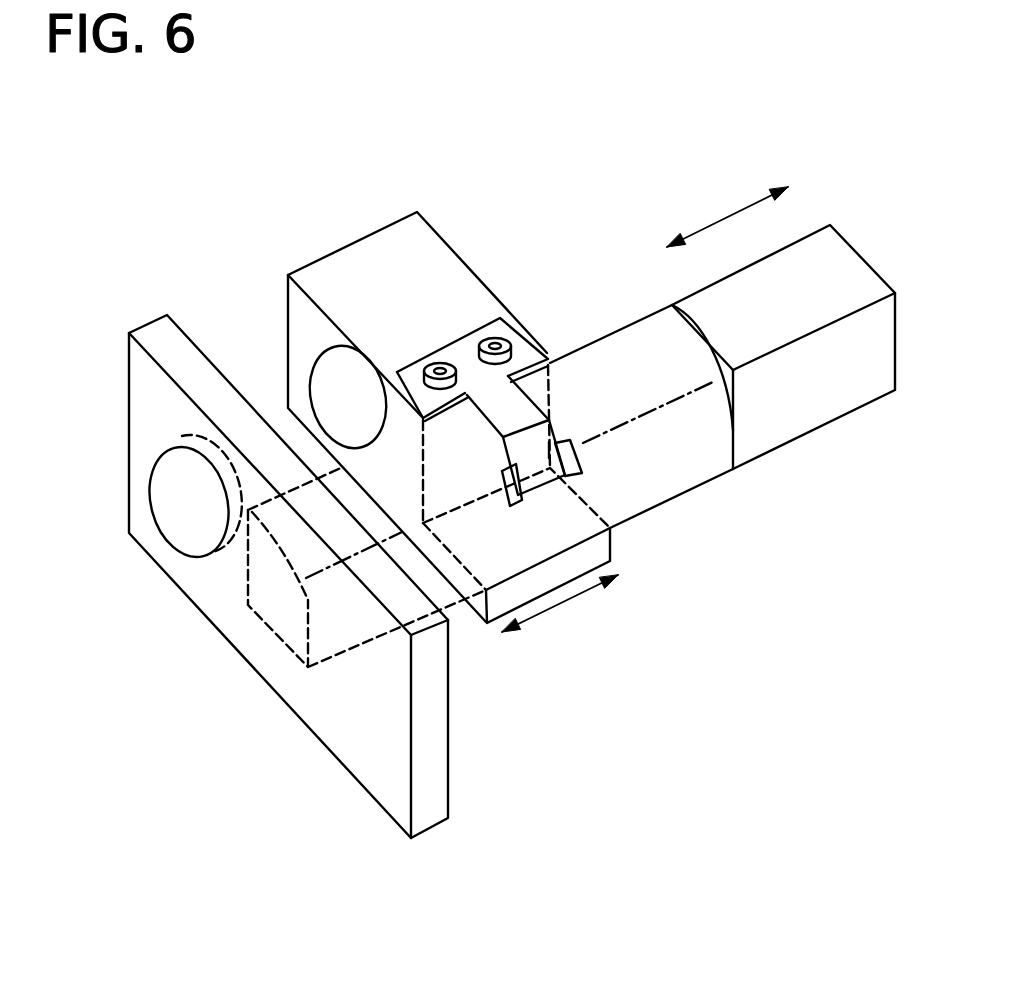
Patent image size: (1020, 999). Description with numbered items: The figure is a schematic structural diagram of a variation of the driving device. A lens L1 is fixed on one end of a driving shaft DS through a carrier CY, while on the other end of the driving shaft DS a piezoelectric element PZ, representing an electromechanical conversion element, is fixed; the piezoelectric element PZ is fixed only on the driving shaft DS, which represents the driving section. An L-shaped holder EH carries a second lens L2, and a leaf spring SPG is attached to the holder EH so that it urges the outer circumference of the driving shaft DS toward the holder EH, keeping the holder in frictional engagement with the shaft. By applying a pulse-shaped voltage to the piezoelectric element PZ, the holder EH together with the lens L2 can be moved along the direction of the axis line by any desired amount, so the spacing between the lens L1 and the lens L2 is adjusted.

The carrier CY is at (157, 330).
The L-shaped holder EH is at (373, 260).
The lens L1 is at (168, 482).
The lens L2 is at (323, 360).
The leaf spring SPG is at (537, 433).
The piezoelectric element PZ is at (810, 247).
The driving shaft DS is at (697, 465).